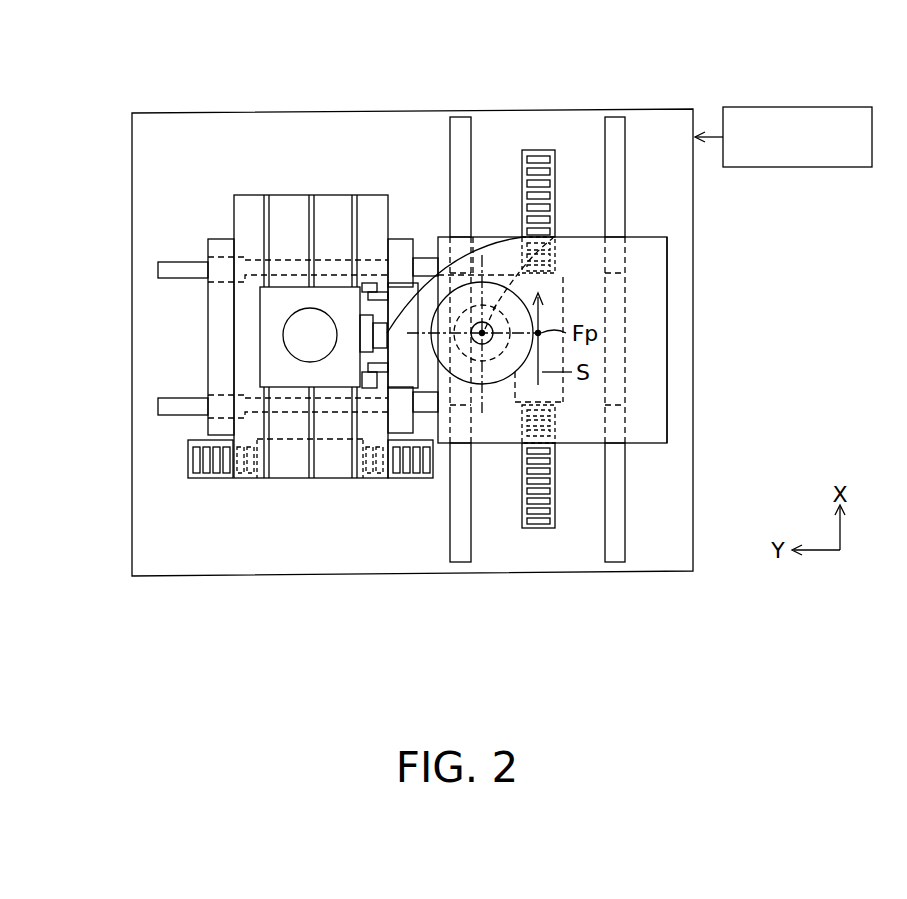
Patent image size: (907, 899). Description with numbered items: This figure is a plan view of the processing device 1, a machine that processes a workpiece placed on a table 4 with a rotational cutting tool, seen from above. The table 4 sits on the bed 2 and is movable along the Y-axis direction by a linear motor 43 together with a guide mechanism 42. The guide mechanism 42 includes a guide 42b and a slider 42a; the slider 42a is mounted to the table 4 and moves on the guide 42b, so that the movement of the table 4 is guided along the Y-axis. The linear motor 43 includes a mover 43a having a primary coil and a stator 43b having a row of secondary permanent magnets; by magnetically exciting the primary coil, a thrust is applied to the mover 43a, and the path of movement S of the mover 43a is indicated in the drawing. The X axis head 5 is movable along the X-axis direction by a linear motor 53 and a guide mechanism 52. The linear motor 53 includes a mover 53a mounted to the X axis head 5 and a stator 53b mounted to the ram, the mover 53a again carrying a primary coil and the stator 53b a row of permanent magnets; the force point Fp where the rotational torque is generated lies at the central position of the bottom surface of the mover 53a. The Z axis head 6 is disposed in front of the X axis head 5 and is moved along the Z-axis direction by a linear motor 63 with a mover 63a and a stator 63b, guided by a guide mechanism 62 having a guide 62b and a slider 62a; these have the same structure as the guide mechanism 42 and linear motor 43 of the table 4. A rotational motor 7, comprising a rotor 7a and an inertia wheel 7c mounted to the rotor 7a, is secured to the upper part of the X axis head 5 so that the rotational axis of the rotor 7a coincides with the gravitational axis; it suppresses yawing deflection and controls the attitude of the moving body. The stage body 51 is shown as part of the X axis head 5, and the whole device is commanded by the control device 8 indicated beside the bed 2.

The processing device 1 is at (620, 64).
The bed 2 is at (190, 112).
The table 4 is at (248, 195).
The X axis head 5 is at (676, 313).
The Z axis head 6 is at (270, 328).
The rotational motor 7 is at (535, 243).
The rotor 7a is at (520, 277).
The inertia wheel 7c is at (523, 237).
The control device 8 is at (851, 107).
The guide mechanism 42 is at (67, 183).
The slider 42a is at (223, 267).
The guide 42b is at (183, 270).
The linear motor 43 is at (427, 620).
The mover 43a is at (345, 470).
The stator 43b is at (400, 478).
The stage body 51 is at (667, 360).
The guide mechanism 52 is at (460, 553).
The linear motor 53 is at (482, 620).
The mover 53a is at (520, 390).
The stator 53b is at (547, 528).
The guide mechanism 62 is at (310, 64).
The slider 62a is at (364, 316).
The guide 62b is at (368, 296).
The linear motor 63 is at (530, 64).
The mover 63a is at (375, 328).
The stator 63b is at (398, 328).